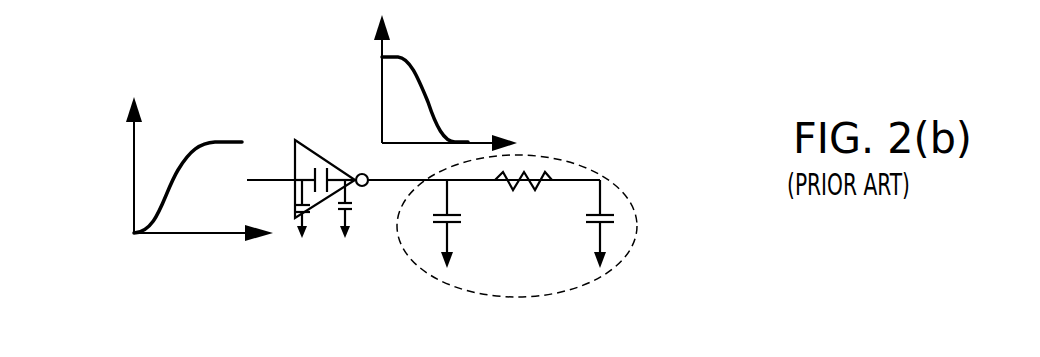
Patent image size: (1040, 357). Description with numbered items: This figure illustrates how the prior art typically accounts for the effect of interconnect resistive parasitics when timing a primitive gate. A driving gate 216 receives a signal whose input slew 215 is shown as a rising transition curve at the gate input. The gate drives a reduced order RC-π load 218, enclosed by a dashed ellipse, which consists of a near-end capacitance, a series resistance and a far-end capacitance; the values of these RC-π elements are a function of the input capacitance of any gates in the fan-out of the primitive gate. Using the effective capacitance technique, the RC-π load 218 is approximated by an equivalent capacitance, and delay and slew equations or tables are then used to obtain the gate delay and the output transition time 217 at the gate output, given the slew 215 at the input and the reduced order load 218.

The input slew 215 is at (193, 151).
The inverter driver 216 is at (319, 153).
The output signal waveform 217 is at (422, 78).
The RC-π load 218 is at (677, 219).